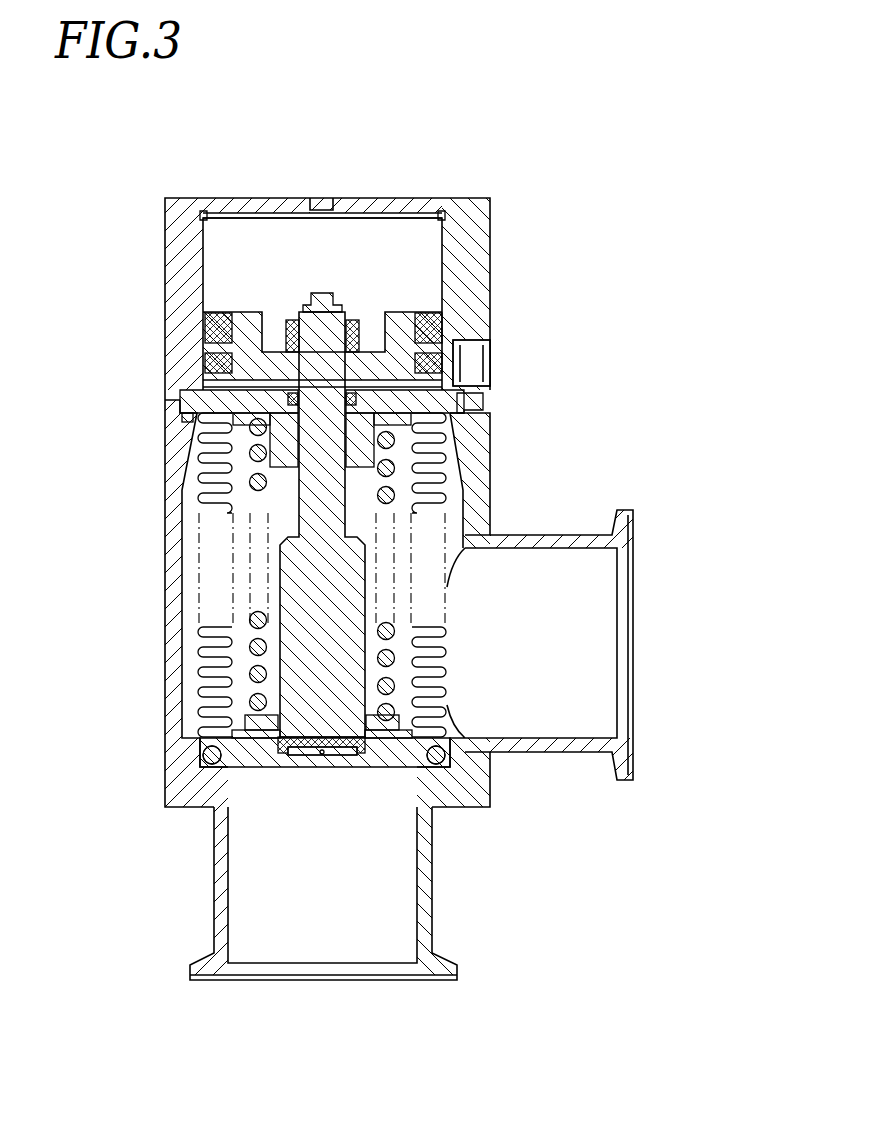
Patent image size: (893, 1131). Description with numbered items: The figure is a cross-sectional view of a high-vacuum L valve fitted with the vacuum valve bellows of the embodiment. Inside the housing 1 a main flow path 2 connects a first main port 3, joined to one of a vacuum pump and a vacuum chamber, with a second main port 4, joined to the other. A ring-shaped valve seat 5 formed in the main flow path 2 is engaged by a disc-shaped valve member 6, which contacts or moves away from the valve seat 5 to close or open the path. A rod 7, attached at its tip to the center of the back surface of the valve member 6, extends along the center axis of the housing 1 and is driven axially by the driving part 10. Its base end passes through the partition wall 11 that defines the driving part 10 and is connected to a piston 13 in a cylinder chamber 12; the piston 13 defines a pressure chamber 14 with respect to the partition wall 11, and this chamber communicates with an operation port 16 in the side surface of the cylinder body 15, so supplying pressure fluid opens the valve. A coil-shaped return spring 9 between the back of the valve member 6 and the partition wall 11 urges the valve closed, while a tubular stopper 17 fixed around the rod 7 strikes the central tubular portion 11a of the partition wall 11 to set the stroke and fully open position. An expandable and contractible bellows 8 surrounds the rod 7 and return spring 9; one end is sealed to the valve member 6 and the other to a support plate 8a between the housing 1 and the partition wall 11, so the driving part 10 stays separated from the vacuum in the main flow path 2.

The housing 1 is at (175, 553).
The main flow path 2 is at (505, 655).
The first main port 3 is at (347, 942).
The second main port 4 is at (582, 680).
The valve seat 5 is at (248, 770).
The valve member 6 is at (373, 753).
The rod 7 is at (317, 597).
The bellows 8 is at (203, 433).
The support plate 8a is at (183, 412).
The return spring 9 is at (372, 468).
The driving part 10 is at (502, 308).
The partition wall 11 is at (260, 405).
The central tubular portion 11a is at (287, 450).
The cylinder chamber 12 is at (213, 281).
The piston 13 is at (210, 328).
The pressure chamber 14 is at (487, 402).
The cylinder body 15 is at (474, 233).
The operation port 16 is at (473, 353).
The tubular stopper 17 is at (282, 668).